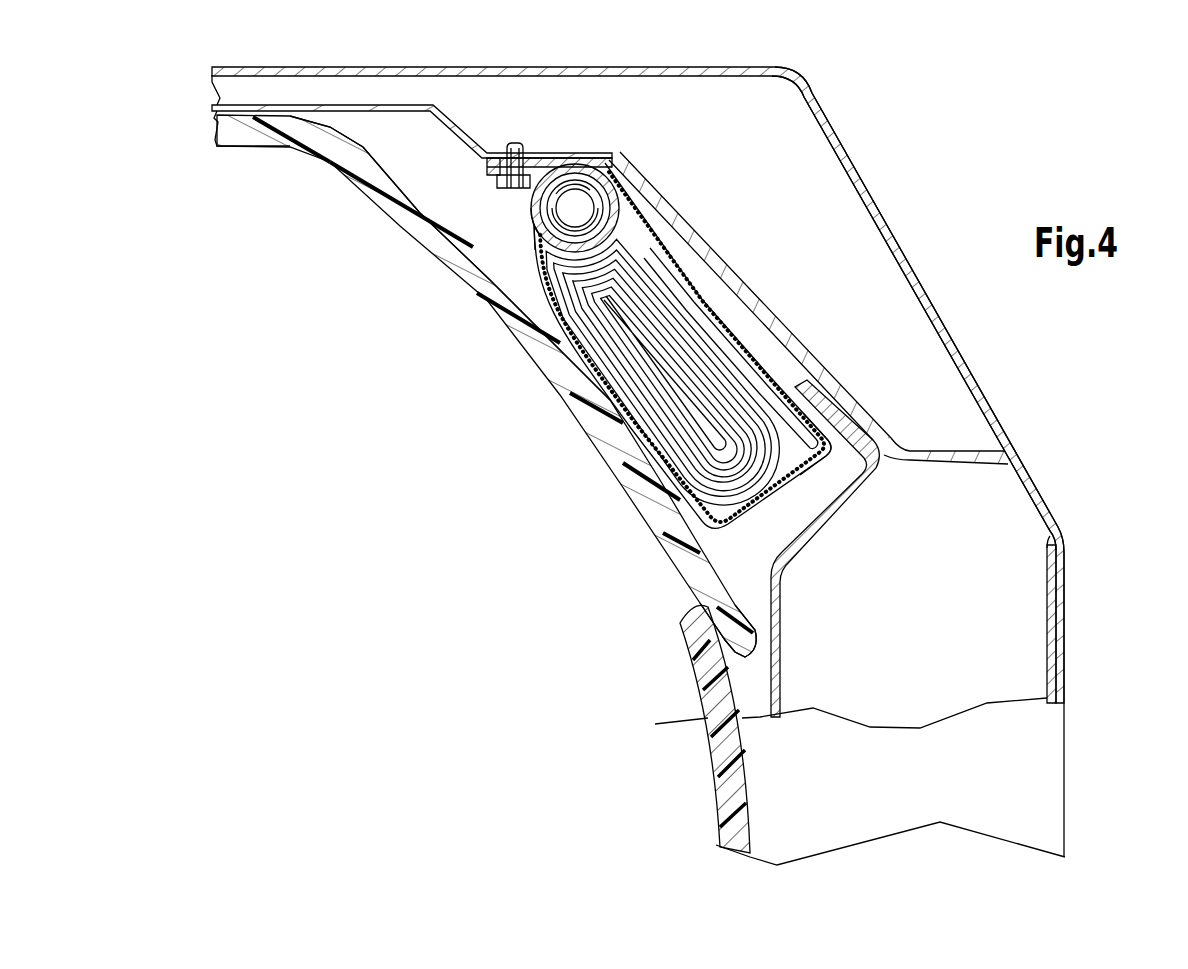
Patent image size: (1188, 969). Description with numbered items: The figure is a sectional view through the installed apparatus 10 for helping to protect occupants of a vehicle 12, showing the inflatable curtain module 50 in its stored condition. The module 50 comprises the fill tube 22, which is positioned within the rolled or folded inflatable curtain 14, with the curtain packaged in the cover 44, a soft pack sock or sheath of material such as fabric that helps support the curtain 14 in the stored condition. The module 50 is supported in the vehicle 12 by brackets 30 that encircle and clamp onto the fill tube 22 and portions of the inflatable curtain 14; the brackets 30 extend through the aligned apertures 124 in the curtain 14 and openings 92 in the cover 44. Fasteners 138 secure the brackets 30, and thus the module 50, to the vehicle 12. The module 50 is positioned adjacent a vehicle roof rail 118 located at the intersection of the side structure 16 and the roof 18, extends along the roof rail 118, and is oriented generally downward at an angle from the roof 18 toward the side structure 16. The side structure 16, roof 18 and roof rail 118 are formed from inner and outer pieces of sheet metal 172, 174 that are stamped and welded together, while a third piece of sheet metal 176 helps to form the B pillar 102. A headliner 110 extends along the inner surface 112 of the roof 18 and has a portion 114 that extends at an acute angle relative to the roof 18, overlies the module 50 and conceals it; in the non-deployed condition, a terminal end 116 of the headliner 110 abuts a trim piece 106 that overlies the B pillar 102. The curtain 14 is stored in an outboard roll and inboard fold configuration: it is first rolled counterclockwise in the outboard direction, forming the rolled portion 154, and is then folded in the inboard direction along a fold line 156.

The apparatus 10 is at (700, 203).
The vehicle 12 is at (933, 187).
The inflatable curtain 14 is at (717, 385).
The side structure 16 is at (1087, 617).
The roof 18 is at (184, 71).
The fill tube 22 is at (596, 172).
The brackets 30 is at (548, 165).
The cover 44 is at (550, 313).
The inflatable curtain module 50 is at (757, 213).
The openings 92 is at (533, 210).
The B pillar 102 is at (1075, 706).
The trim piece 106 is at (722, 714).
The headliner 110 is at (255, 130).
The inner surface 112 is at (364, 116).
The portion 114 is at (633, 460).
The terminal end 116 is at (700, 595).
The roof rail 118 is at (887, 180).
The apertures 124 is at (606, 223).
The fasteners 138 is at (517, 143).
The rolled portion 154 is at (647, 407).
The fold line 156 is at (830, 455).
The inner piece of sheet metal 172 is at (1047, 607).
The outer piece of sheet metal 174 is at (1063, 591).
The third piece of sheet metal 176 is at (782, 661).